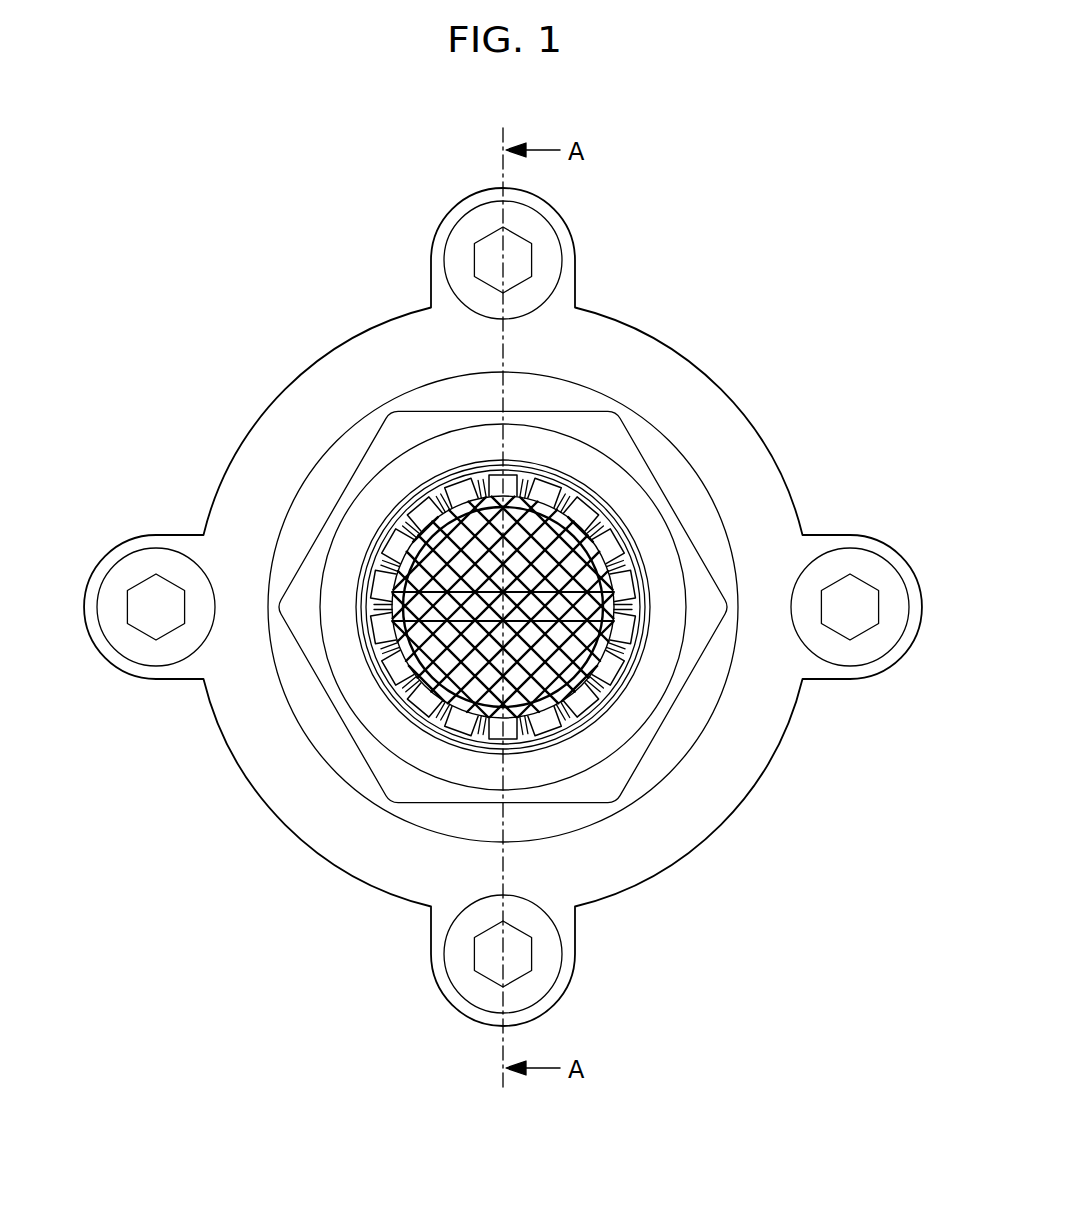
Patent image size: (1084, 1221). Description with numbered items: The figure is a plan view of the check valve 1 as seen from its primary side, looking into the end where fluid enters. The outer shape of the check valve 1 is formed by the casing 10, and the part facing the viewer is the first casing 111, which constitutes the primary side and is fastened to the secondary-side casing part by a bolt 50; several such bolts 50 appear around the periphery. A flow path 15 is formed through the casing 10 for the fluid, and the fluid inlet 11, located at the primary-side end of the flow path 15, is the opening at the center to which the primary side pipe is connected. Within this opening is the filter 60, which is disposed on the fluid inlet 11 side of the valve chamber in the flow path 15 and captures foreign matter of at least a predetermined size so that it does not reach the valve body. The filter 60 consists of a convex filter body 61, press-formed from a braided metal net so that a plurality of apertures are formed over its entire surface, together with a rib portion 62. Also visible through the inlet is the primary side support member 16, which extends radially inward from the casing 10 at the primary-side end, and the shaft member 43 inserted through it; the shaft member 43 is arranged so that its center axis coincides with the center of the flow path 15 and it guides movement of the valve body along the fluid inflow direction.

The check valve 1 is at (290, 283).
The casing 10 is at (503, 607).
The fluid inlet 11 is at (629, 524).
The flow path 15 is at (420, 513).
The primary side support member 16 is at (443, 607).
The shaft member 43 is at (500, 603).
The bolt 50 is at (541, 237).
The filter 60 is at (616, 700).
The filter body 61 is at (530, 668).
The rib portion 62 is at (608, 668).
The first casing 111 is at (627, 443).